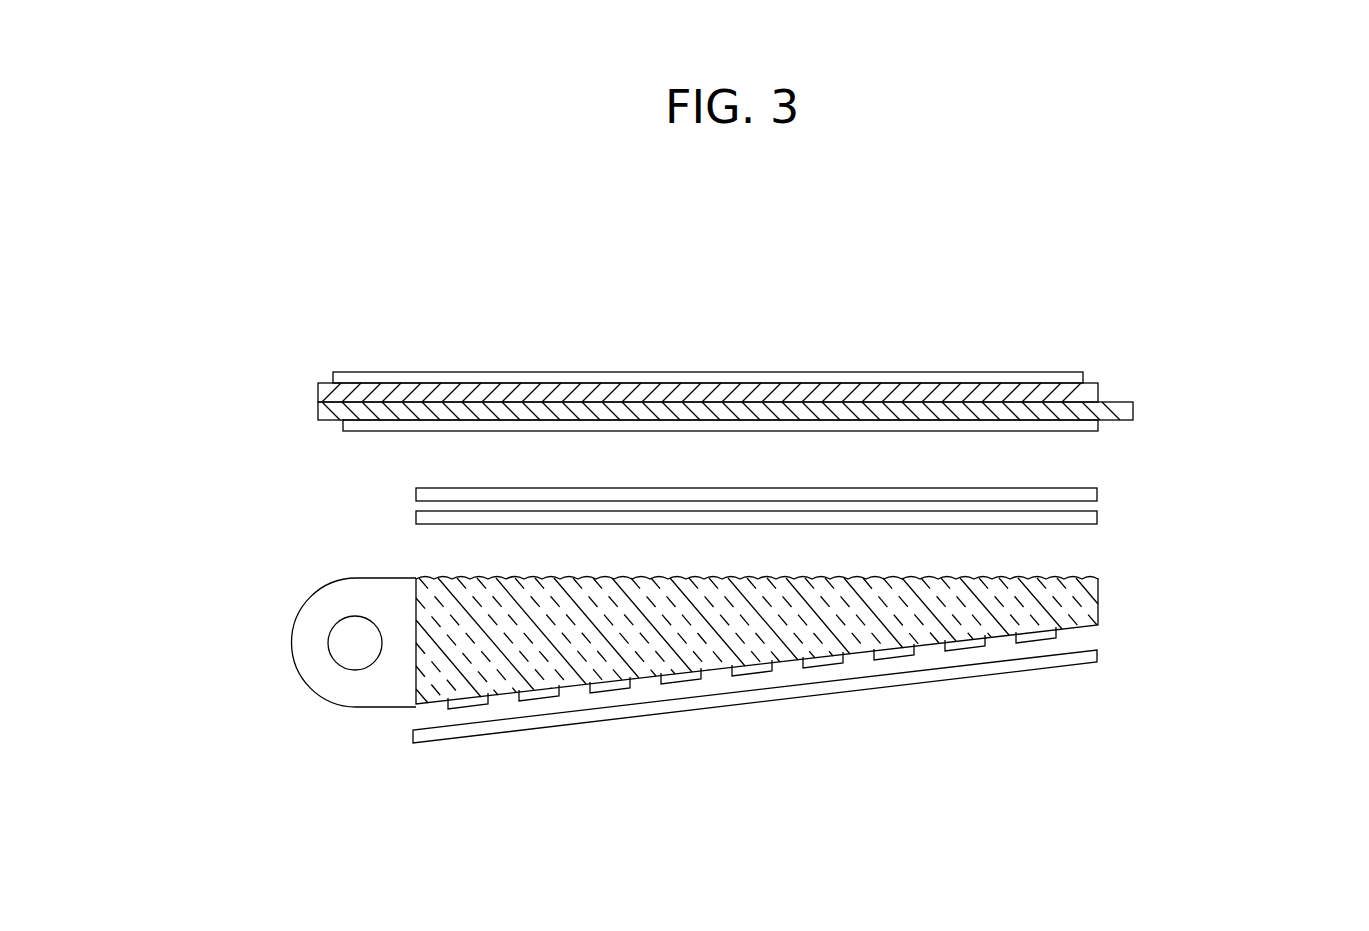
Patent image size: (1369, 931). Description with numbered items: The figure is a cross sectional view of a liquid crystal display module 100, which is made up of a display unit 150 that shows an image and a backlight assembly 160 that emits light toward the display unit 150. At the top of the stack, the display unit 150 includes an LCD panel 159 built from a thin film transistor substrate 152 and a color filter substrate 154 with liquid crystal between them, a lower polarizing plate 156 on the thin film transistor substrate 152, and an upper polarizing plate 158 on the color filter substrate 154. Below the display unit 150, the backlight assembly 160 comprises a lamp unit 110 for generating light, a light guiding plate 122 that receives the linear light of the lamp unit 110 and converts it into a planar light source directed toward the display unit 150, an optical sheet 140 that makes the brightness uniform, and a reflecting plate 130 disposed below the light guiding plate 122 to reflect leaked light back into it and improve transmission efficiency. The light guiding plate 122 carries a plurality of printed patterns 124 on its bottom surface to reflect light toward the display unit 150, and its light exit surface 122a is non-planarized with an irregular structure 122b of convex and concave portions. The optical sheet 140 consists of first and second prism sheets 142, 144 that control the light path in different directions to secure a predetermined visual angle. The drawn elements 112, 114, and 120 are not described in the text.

The liquid crystal display module 100 is at (1104, 313).
The lamp unit 110 is at (195, 562).
The lamp 112 is at (340, 627).
The lamp reflector 114 is at (323, 698).
The light guide unit 120 is at (1210, 567).
The light guiding plate 122 is at (1097, 578).
The light exit surface 122a is at (612, 580).
The irregular structure 122b is at (470, 570).
The printed patterns 124 is at (1053, 640).
The reflecting plate 130 is at (1043, 663).
The optical sheet 140 is at (1210, 458).
The first prism sheet 142 is at (1097, 518).
The second prism sheet 144 is at (1097, 492).
The display unit 150 is at (378, 348).
The thin film transistor substrate 152 is at (318, 414).
The color filter substrate 154 is at (318, 393).
The lower polarizing plate 156 is at (345, 426).
The upper polarizing plate 158 is at (336, 378).
The LCD panel 159 is at (195, 323).
The backlight assembly 160 is at (1285, 500).